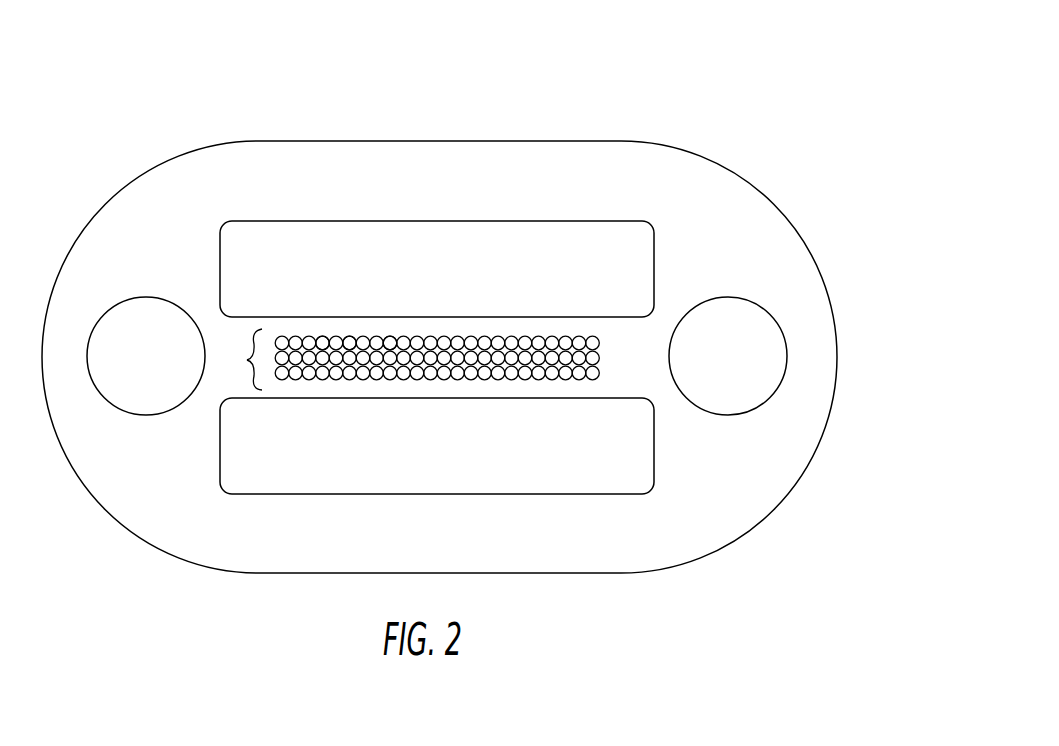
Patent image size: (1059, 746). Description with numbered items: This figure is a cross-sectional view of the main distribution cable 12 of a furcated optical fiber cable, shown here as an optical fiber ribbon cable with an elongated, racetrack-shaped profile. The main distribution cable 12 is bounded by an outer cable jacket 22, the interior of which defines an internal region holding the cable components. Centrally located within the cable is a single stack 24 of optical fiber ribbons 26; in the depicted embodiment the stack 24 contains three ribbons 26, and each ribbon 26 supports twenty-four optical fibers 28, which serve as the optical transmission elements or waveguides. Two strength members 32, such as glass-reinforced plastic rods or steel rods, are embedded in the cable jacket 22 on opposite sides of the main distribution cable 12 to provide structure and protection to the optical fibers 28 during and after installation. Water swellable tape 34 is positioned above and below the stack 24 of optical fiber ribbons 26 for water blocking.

The main distribution cable 12 is at (662, 68).
The outer cable jacket 22 is at (773, 486).
The stack of optical fiber ribbons 24 is at (245, 360).
The optical fiber ribbon 26 is at (608, 343).
The optical fibers 28 is at (322, 342).
The strength members 32 is at (127, 318).
The water swellable tape 34 is at (626, 250).